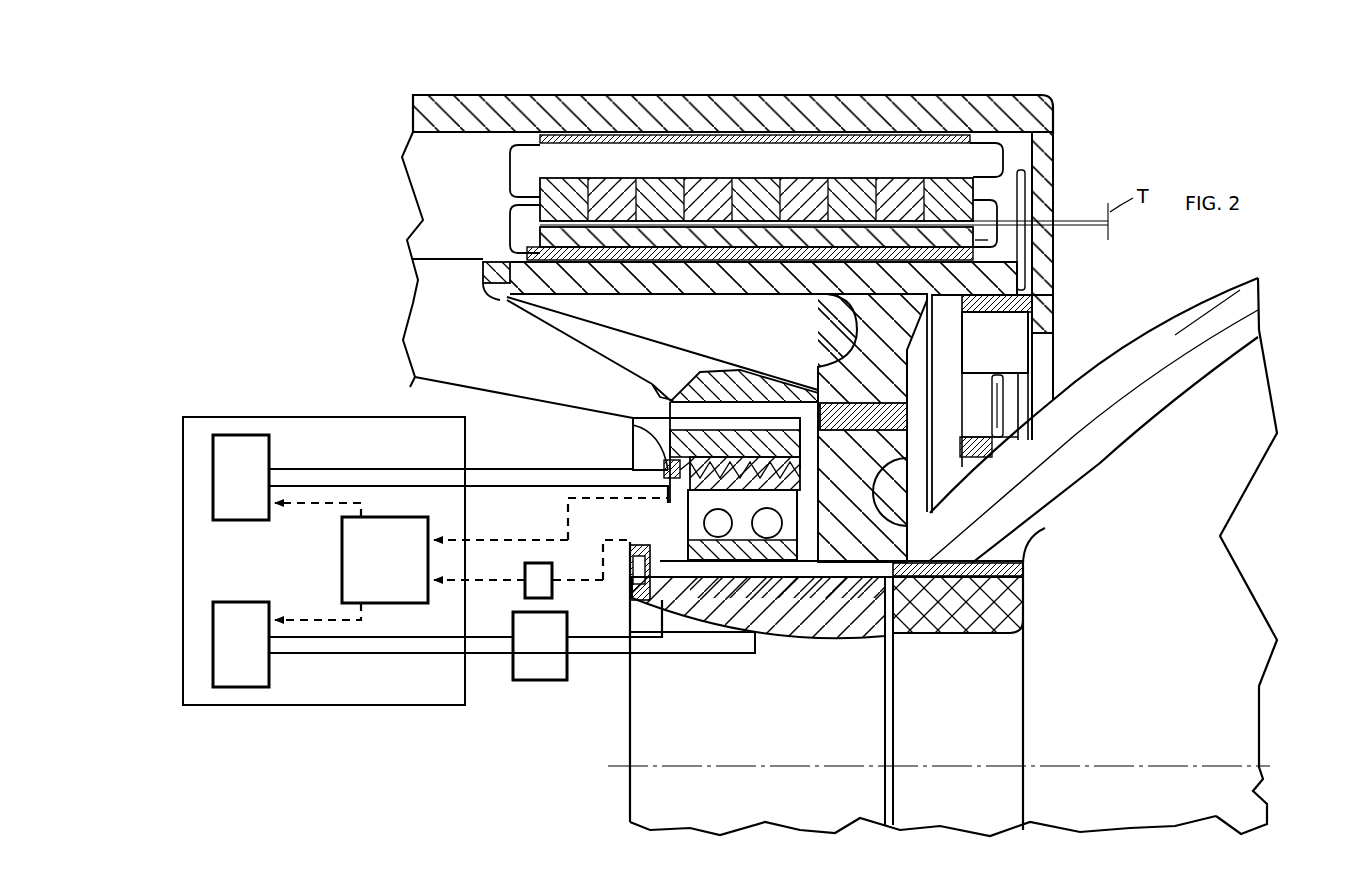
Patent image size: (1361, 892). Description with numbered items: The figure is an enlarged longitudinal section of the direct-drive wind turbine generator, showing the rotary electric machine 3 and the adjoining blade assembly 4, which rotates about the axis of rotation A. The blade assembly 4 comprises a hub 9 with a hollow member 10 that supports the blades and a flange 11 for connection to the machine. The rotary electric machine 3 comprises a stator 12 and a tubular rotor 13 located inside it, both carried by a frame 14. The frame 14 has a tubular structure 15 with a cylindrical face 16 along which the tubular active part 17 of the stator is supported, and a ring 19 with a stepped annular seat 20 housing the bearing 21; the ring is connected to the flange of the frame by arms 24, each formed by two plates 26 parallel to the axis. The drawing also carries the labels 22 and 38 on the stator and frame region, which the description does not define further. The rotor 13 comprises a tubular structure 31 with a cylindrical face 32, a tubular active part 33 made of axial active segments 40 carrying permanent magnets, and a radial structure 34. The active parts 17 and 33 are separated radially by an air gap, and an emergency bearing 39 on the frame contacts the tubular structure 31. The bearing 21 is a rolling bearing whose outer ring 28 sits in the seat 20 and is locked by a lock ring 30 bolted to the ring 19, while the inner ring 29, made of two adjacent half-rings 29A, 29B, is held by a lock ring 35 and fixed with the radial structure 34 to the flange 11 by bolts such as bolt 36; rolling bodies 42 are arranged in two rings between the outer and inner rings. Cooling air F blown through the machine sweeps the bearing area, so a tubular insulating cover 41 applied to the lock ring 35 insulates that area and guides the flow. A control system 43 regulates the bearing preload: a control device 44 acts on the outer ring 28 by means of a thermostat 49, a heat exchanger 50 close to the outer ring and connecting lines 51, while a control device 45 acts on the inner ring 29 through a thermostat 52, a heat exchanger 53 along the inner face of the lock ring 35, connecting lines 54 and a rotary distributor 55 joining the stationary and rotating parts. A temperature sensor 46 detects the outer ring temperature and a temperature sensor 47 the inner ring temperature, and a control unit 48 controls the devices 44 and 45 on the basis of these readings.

The rotary electric machine 3 is at (1095, 138).
The blade assembly 4 is at (1290, 298).
The hub 9 is at (1224, 278).
The hollow member 10 is at (1222, 330).
The flange 11 is at (1000, 610).
The stator 12 is at (1062, 178).
The rotor 13 is at (1012, 240).
The frame 14 is at (405, 88).
The tubular structure 15 is at (478, 118).
The cylindrical face 16 is at (662, 150).
The tubular active part 17 is at (1010, 155).
The ring 19 is at (695, 440).
The annular seat 20 is at (740, 560).
The bearing 21 is at (830, 528).
The stator 22 is at (912, 157).
The arms 24 is at (575, 448).
The plates 26 is at (460, 345).
The outer ring 28 is at (822, 488).
The inner ring 29 is at (935, 565).
The half-ring 29A is at (690, 513).
The half-ring 29B is at (790, 560).
The lock ring 30 is at (680, 410).
The tubular structure 31 is at (583, 282).
The cylindrical face 32 is at (512, 222).
The tubular active part 33 is at (995, 246).
The radial structure 34 is at (905, 425).
The lock ring 35 is at (848, 620).
The bolt 36 is at (993, 578).
The face 38 is at (826, 444).
The emergency bearing 39 is at (460, 265).
The axial active segments 40 is at (763, 240).
The insulating cover 41 is at (768, 642).
The rolling bodies 42 is at (705, 600).
The control system 43 is at (216, 412).
The control device 44 is at (444, 460).
The control device 45 is at (432, 686).
The temperature sensor 46 is at (665, 470).
The temperature sensor 47 is at (660, 545).
The control unit 48 is at (365, 565).
The thermostat 49 is at (240, 505).
The heat exchanger 50 is at (880, 462).
The connecting lines 51 is at (392, 470).
The thermostat 52 is at (237, 605).
The heat exchanger 53 is at (630, 568).
The connecting lines 54 is at (604, 645).
The rotary distributor 55 is at (537, 665).
The axis of rotation A is at (720, 768).
The cooling air F is at (938, 712).